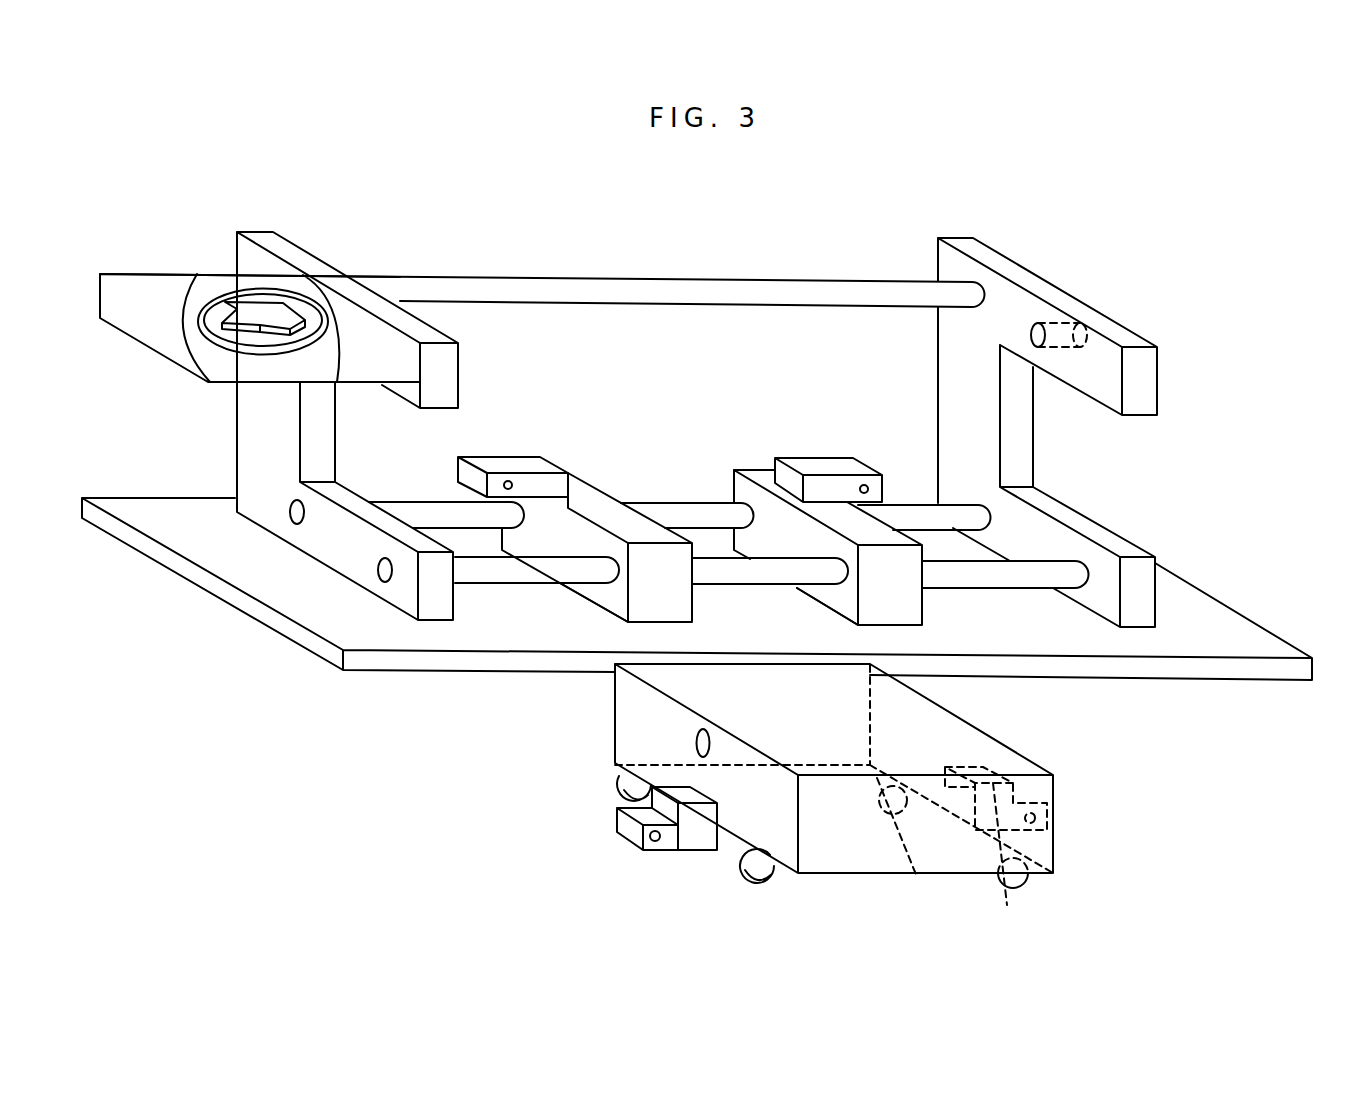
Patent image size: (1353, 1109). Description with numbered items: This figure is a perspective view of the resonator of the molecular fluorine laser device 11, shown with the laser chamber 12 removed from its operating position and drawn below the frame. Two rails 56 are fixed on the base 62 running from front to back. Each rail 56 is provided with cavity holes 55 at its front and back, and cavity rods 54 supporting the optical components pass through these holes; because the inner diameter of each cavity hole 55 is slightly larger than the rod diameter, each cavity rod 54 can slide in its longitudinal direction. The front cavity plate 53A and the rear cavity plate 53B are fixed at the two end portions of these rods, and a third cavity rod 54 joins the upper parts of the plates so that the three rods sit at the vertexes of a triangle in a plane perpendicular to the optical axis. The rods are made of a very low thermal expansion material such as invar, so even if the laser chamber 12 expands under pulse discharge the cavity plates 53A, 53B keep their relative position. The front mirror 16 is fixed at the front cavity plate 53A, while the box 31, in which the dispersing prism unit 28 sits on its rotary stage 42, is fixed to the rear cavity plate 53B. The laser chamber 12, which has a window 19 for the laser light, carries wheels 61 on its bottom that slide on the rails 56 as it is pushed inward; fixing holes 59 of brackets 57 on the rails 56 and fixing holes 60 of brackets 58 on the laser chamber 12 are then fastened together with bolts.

The molecular fluorine laser device 11 is at (1021, 228).
The laser chamber 12 is at (838, 857).
The front mirror 16 is at (1090, 330).
The window 19 is at (697, 740).
The dispersing prism unit 28 is at (227, 328).
The box 31 is at (148, 282).
The rotary stage 42 is at (230, 347).
The front cavity plate 53A is at (1152, 370).
The rear cavity plate 53B is at (353, 493).
The cavity rod 54 is at (650, 283).
The cavity hole 55 is at (755, 500).
The rail 56 is at (687, 602).
The bracket 57 is at (548, 470).
The bracket 58 is at (690, 836).
The fixing hole 59 is at (509, 480).
The fixing hole 60 is at (655, 848).
The wheel 61 is at (618, 778).
The base 62 is at (377, 662).